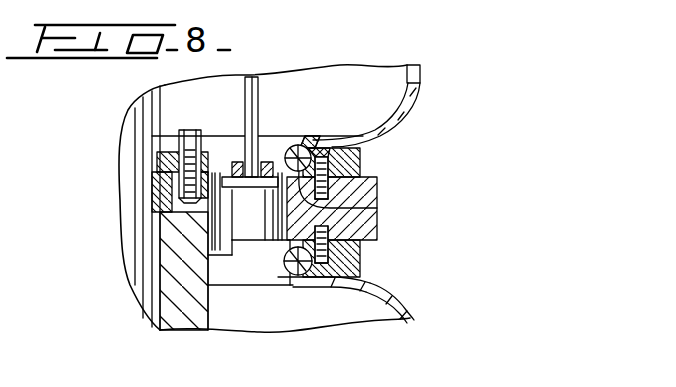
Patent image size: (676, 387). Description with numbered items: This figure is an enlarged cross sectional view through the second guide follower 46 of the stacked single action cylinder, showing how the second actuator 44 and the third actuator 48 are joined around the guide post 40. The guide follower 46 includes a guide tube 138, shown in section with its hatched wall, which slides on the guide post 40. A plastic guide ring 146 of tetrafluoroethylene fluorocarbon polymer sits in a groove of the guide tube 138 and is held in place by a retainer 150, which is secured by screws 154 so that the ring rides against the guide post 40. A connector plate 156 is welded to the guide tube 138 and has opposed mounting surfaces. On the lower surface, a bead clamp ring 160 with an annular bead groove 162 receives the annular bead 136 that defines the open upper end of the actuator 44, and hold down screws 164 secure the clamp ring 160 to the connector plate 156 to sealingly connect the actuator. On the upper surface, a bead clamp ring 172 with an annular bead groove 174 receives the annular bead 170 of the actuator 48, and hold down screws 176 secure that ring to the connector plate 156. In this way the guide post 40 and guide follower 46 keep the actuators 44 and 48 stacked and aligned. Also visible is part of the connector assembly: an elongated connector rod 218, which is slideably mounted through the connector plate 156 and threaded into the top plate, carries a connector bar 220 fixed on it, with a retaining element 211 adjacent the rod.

The guide post 40 is at (162, 313).
The second actuator 44 is at (414, 308).
The second guide follower 46 is at (378, 184).
The third actuator 48 is at (421, 75).
The annular bead 136 is at (291, 288).
The guide tube 138 is at (190, 305).
The plastic guide ring 146 is at (160, 195).
The retainer 150 is at (160, 158).
The screws 154 is at (190, 140).
The connector plate 156 is at (364, 228).
The bead clamp ring 160 is at (330, 276).
The annular bead groove 162 is at (318, 249).
The hold down screws 164 is at (323, 264).
The annular bead 170 is at (377, 208).
The bead clamp ring 172 is at (363, 145).
The annular bead groove 174 is at (302, 146).
The hold down screws 176 is at (362, 171).
The locking nut 211 is at (233, 160).
The connector rod 218 is at (253, 77).
The connector bar 220 is at (250, 188).